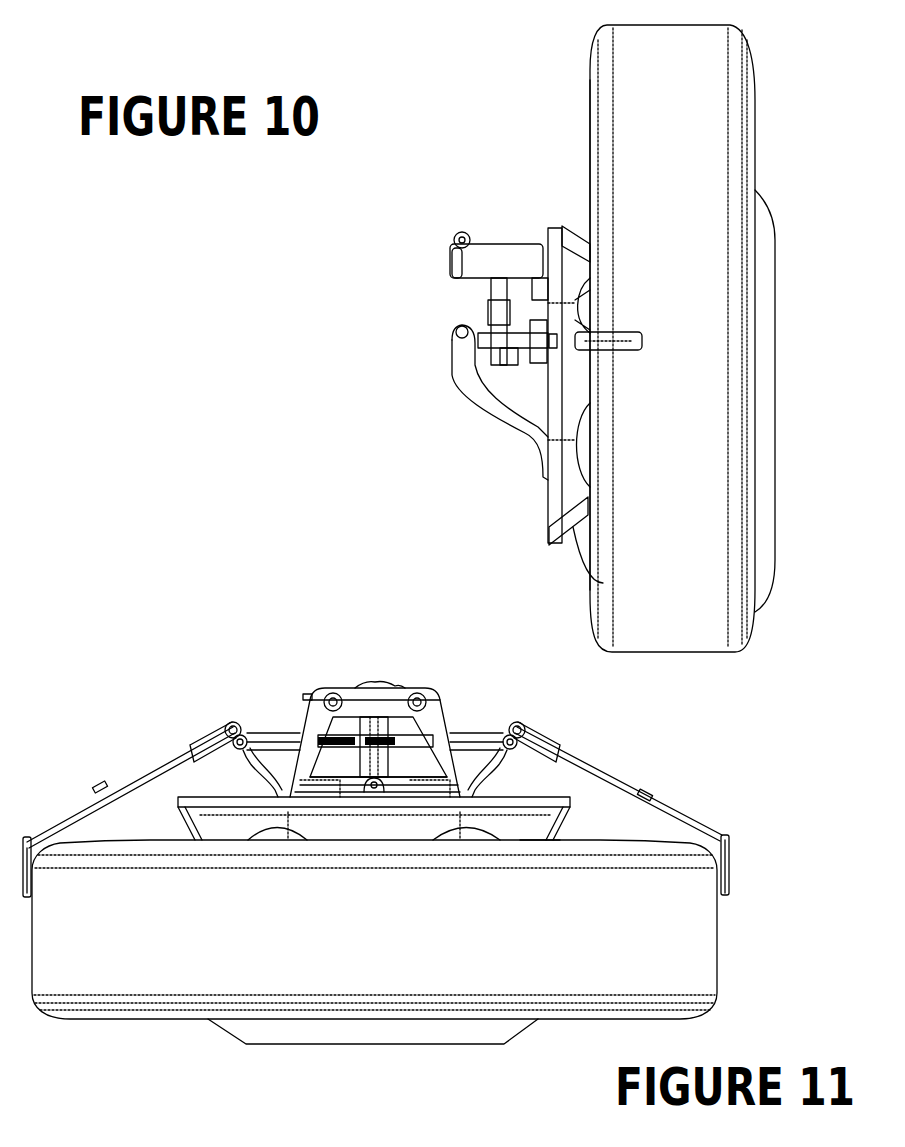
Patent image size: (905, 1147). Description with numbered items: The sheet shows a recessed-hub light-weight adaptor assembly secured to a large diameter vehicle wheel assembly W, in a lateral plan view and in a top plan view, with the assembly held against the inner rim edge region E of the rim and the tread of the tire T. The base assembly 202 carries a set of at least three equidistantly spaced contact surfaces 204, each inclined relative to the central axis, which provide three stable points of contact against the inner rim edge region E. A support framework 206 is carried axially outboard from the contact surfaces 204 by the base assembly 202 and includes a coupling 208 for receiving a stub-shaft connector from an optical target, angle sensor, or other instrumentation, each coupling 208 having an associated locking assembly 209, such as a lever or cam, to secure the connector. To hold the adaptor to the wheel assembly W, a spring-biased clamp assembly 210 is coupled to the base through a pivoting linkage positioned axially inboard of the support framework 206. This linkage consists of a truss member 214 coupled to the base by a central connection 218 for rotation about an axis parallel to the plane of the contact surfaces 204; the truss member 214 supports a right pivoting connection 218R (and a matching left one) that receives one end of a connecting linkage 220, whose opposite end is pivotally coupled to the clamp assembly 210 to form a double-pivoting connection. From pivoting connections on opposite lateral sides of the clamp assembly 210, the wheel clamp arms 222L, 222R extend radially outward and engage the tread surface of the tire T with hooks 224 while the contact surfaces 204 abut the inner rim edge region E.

In FIG. 10, the tire T is at (640, 95).
In FIG. 11, the tire T is at (120, 955).
In FIG. 10, the wheel assembly W is at (772, 243).
In FIG. 11, the wheel assembly W is at (435, 1052).
In FIG. 10, the inner rim edge region E is at (600, 198).
In FIG. 11, the inner rim edge region E is at (545, 858).
In FIG. 11, the base assembly 202 is at (420, 832).
In FIG. 10, the contact surfaces 204 is at (567, 243).
In FIG. 11, the contact surfaces 204 is at (195, 823).
In FIG. 10, the support framework 206 is at (467, 382).
In FIG. 11, the support framework 206 is at (310, 730).
In FIG. 10, the coupling 208 is at (448, 263).
In FIG. 11, the coupling 208 is at (462, 612).
In FIG. 10, the locking assembly 209 is at (463, 240).
In FIG. 10, the clamp assembly 210 is at (497, 281).
In FIG. 11, the clamp assembly 210 is at (473, 737).
In FIG. 11, the truss member 214 is at (342, 779).
In FIG. 11, the central connection 218 is at (375, 790).
In FIG. 10, the right pivoting connection 218R is at (538, 357).
In FIG. 10, the connecting linkage 220 is at (490, 311).
In FIG. 11, the connecting linkage 220 is at (233, 727).
In FIG. 10, the right wheel clamp arm 222R is at (557, 350).
In FIG. 11, the right wheel clamp arm 222R is at (88, 795).
In FIG. 11, the left wheel clamp arm 222L is at (673, 803).
In FIG. 10, the hooks 224 is at (620, 342).
In FIG. 11, the hooks 224 is at (25, 848).